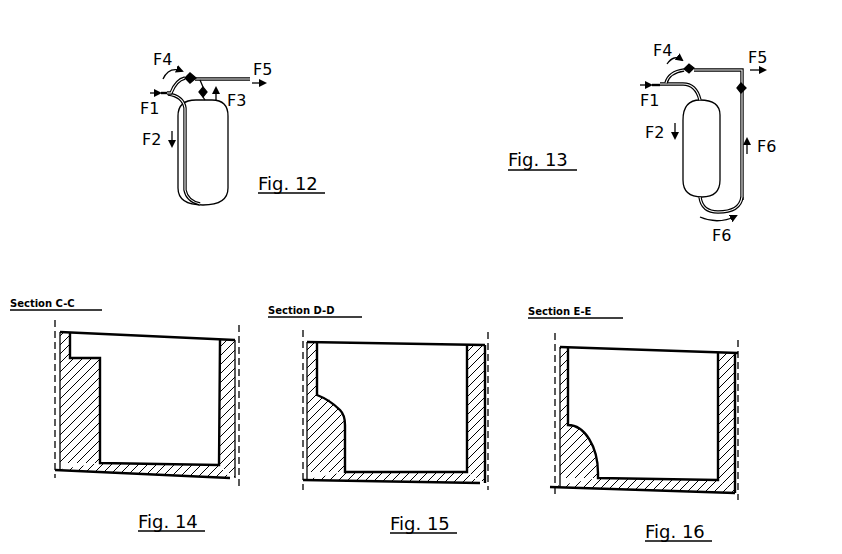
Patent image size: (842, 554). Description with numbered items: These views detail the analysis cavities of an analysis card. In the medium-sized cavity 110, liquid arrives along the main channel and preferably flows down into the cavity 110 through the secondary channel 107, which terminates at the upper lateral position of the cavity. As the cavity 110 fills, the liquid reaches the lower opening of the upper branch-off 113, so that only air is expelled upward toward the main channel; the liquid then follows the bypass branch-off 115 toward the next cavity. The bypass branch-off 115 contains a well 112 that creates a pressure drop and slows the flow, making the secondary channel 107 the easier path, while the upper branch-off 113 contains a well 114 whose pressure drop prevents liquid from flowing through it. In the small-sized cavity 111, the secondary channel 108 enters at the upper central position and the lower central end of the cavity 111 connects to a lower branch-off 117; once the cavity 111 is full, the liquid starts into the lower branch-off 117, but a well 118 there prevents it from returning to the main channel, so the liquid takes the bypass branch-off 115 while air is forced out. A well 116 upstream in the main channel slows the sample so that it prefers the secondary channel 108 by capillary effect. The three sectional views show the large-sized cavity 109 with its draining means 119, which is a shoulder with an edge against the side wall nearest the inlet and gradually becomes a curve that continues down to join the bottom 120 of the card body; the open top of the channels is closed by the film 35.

In FIG. 15, the film 35 is at (363, 343).
In FIG. 12, the secondary channel 107 is at (172, 102).
In FIG. 13, the secondary channel 108 is at (687, 90).
In FIG. 14, the large-sized cavity 109 is at (127, 395).
In FIG. 15, the large-sized cavity 109 is at (385, 392).
In FIG. 16, the large-sized cavity 109 is at (650, 418).
In FIG. 12, the medium-sized cavity 110 is at (207, 157).
In FIG. 13, the small-sized cavity 111 is at (700, 153).
In FIG. 12, the well 112 is at (192, 77).
In FIG. 12, the upper branch-off 113 is at (183, 108).
In FIG. 12, the well 114 is at (207, 100).
In FIG. 12, the bypass branch-off 115 is at (200, 79).
In FIG. 13, the bypass branch-off 115 is at (667, 80).
In FIG. 13, the well 116 is at (692, 66).
In FIG. 13, the lower branch-off 117 is at (745, 172).
In FIG. 13, the well 118 is at (746, 90).
In FIG. 14, the draining means 119 is at (90, 358).
In FIG. 15, the draining means 119 is at (340, 407).
In FIG. 16, the draining means 119 is at (590, 437).
In FIG. 14, the bottom 120 is at (118, 470).